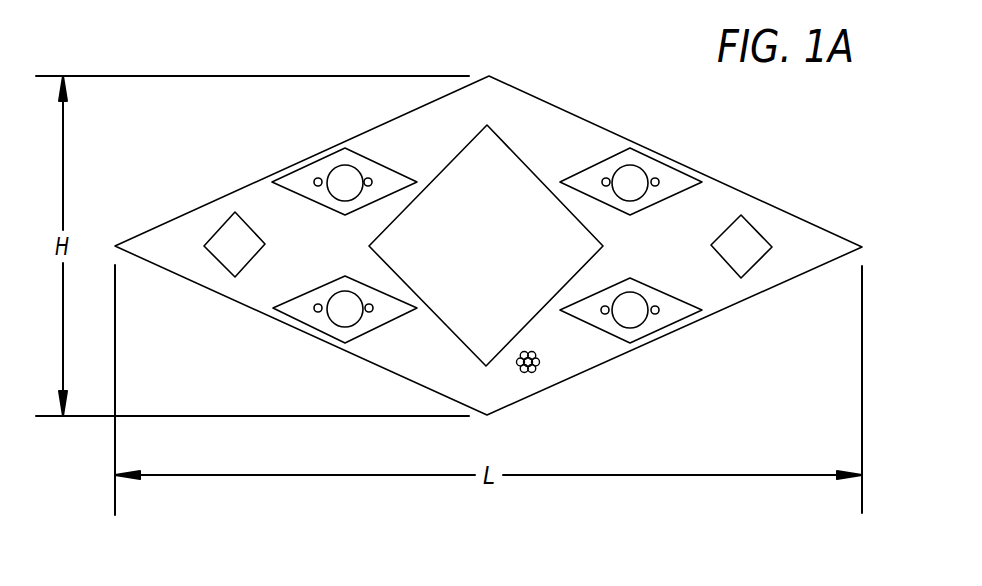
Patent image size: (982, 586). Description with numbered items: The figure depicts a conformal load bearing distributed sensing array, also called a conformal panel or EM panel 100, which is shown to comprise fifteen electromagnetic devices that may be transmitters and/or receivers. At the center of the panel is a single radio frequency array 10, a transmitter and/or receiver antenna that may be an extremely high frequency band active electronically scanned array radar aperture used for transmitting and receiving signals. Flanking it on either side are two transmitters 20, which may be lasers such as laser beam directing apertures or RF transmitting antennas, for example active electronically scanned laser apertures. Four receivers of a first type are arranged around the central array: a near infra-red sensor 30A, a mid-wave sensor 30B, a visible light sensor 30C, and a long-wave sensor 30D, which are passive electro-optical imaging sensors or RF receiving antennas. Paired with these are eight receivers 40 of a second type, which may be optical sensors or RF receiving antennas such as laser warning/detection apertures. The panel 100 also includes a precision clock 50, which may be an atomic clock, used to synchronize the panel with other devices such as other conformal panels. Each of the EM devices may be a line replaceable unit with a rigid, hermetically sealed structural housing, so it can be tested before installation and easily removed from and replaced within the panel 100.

The conformal panel 100 is at (522, 63).
The radio frequency array 10 is at (495, 170).
The transmitters 20 is at (227, 250).
The near infra-red sensor 30A is at (333, 167).
The mid-wave sensor 30B is at (630, 165).
The visible light sensor 30C is at (337, 290).
The long-wave sensor 30D is at (630, 292).
The receivers 40 is at (368, 178).
The precision clock 50 is at (533, 364).